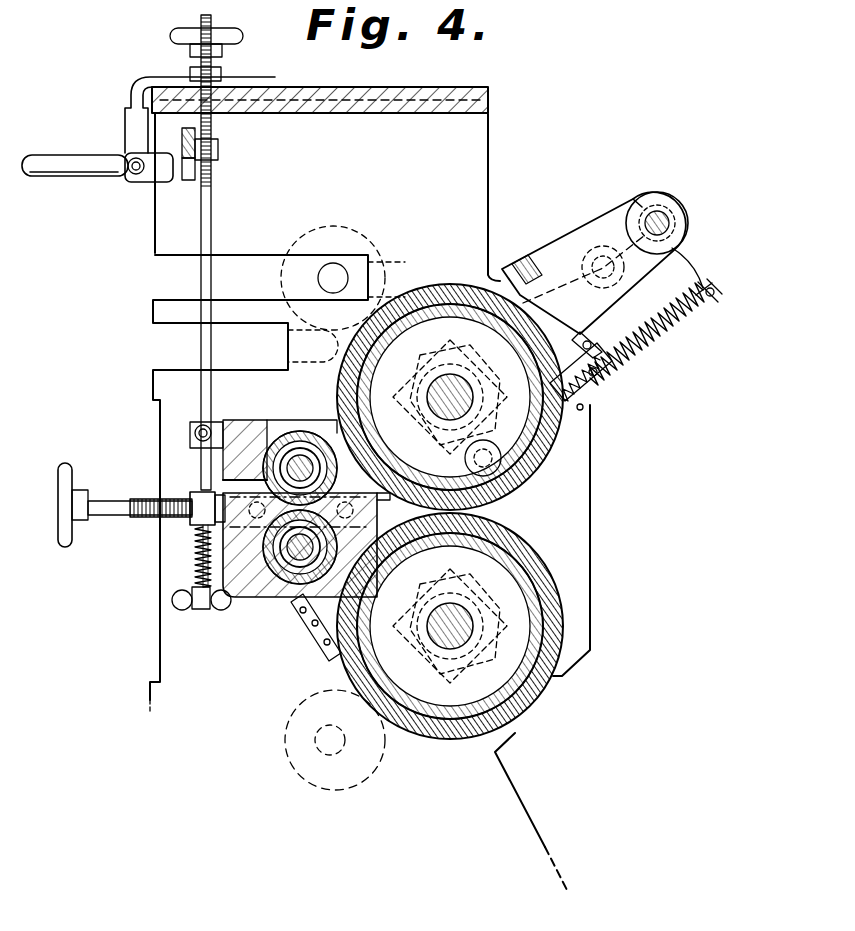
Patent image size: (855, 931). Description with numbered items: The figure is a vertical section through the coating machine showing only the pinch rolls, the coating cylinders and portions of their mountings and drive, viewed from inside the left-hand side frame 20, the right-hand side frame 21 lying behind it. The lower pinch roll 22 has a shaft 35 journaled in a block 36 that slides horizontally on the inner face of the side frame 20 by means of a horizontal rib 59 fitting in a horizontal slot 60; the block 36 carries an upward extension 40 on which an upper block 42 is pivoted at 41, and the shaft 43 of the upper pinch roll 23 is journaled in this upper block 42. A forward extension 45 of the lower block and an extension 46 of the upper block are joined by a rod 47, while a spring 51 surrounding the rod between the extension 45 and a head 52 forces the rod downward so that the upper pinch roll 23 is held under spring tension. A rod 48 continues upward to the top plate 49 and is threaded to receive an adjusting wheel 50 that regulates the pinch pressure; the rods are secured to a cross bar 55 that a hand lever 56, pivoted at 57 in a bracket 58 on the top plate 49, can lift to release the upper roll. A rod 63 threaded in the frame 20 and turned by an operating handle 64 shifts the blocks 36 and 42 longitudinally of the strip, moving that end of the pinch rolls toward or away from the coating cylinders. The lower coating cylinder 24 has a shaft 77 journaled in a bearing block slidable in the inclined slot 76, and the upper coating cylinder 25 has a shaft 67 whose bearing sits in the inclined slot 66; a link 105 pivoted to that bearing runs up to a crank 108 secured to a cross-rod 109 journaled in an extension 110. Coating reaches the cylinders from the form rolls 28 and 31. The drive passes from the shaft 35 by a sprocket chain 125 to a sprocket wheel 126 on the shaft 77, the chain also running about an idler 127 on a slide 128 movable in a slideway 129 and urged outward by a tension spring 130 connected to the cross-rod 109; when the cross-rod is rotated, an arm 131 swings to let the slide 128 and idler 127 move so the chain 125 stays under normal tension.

The left-hand side frame 20 is at (470, 177).
The right-hand side frame 21 is at (495, 107).
The lower pinch roll 22 is at (237, 607).
The upper pinch roll 23 is at (273, 437).
The lower coating cylinder 24 is at (560, 627).
The upper coating cylinder 25 is at (478, 290).
The form roll 28 is at (358, 236).
The form roll 31 is at (300, 694).
The shaft 35 is at (302, 565).
The block 36 is at (258, 587).
The upward extension 40 is at (320, 434).
The pivot 41 is at (338, 412).
The upper block 42 is at (225, 425).
The shaft 43 is at (288, 470).
The forward extension 45 is at (190, 520).
The extension 46 is at (192, 433).
The rod 47 is at (203, 455).
The rod 48 is at (200, 236).
The top plate 49 is at (310, 88).
The adjusting wheel 50 is at (240, 38).
The spring 51 is at (195, 566).
The head 52 is at (190, 602).
The cross bar 55 is at (218, 150).
The hand lever 56 is at (95, 150).
The pivot 57 is at (128, 174).
The bracket 58 is at (146, 86).
The horizontal rib 59 is at (283, 547).
The horizontal slot 60 is at (300, 615).
The rod 63 is at (105, 512).
The operating handle 64 is at (65, 462).
The slot 66 is at (440, 298).
The shaft 67 is at (467, 377).
The slot 76 is at (513, 728).
The shaft 77 is at (448, 645).
The link 105 is at (540, 280).
The crank 108 is at (603, 228).
The cross-rod 109 is at (668, 225).
The extension 110 is at (636, 206).
The sprocket chain 125 is at (520, 522).
The sprocket wheel 126 is at (512, 552).
The idler 127 is at (525, 486).
The slide 128 is at (555, 456).
The slideway 129 is at (573, 417).
The tension spring 130 is at (655, 341).
The arm 131 is at (716, 294).